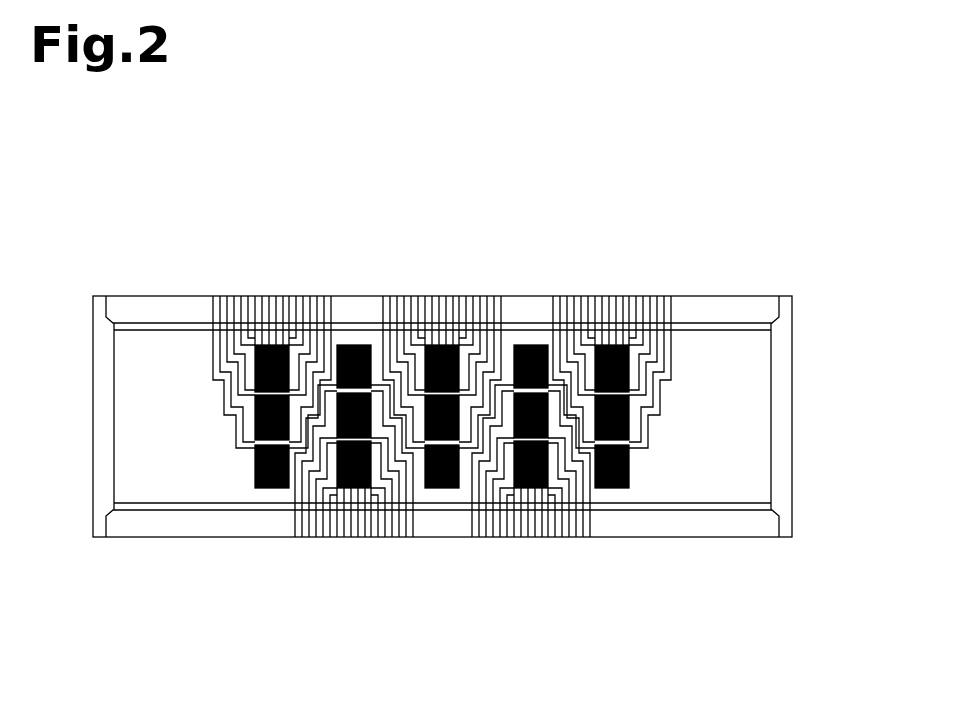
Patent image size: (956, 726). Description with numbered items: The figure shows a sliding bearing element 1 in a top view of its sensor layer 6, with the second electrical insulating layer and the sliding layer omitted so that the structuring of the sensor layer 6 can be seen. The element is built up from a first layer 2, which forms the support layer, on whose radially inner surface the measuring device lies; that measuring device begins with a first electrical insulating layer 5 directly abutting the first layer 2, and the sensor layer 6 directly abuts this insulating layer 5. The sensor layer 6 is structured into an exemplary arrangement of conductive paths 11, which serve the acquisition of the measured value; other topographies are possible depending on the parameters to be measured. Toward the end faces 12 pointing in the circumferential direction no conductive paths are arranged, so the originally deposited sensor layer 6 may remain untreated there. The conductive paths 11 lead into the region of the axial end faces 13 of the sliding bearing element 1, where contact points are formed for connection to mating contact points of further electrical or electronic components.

The sliding bearing element 1 is at (750, 152).
The first layer 2 is at (791, 546).
The first electrical insulating layer 5 is at (709, 465).
The sensor layer 6 is at (583, 538).
The conductive paths 11 is at (668, 325).
The end faces 12 is at (794, 418).
The axial end faces 13 is at (457, 292).